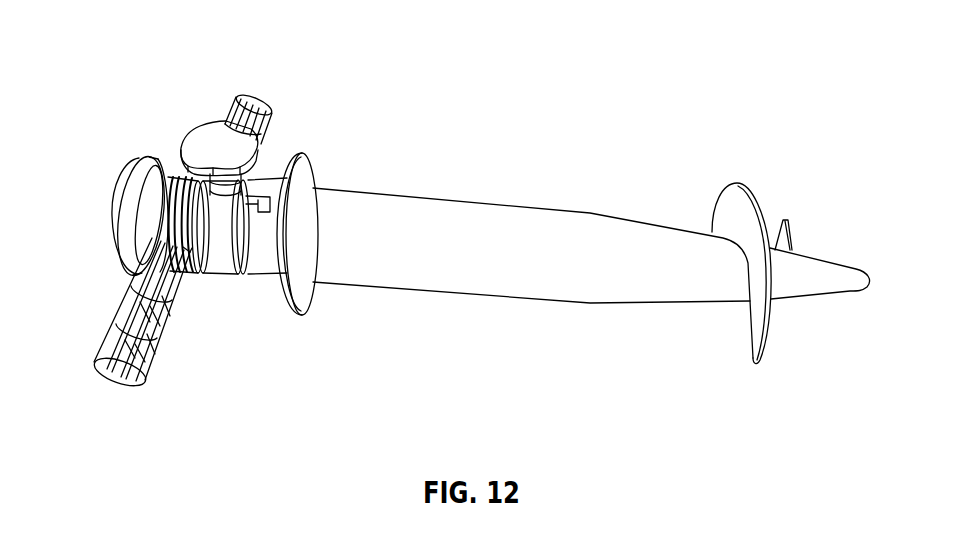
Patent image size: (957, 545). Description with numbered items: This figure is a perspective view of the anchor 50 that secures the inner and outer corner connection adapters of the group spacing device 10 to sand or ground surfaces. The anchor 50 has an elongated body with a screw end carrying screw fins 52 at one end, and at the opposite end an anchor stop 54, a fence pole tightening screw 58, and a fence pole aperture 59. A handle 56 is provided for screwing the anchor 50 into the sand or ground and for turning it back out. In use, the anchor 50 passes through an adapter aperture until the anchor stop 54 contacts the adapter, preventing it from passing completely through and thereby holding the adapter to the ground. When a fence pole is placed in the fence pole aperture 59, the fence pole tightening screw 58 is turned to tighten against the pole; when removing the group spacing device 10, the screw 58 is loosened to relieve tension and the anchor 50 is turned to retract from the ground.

The group spacing device 10 is at (770, 37).
The anchor 50 is at (632, 198).
The screw fins 52 is at (755, 366).
The anchor stop 54 is at (306, 177).
The handle 56 is at (257, 101).
The fence pole tightening screw 58 is at (206, 136).
The fence pole aperture 59 is at (125, 186).